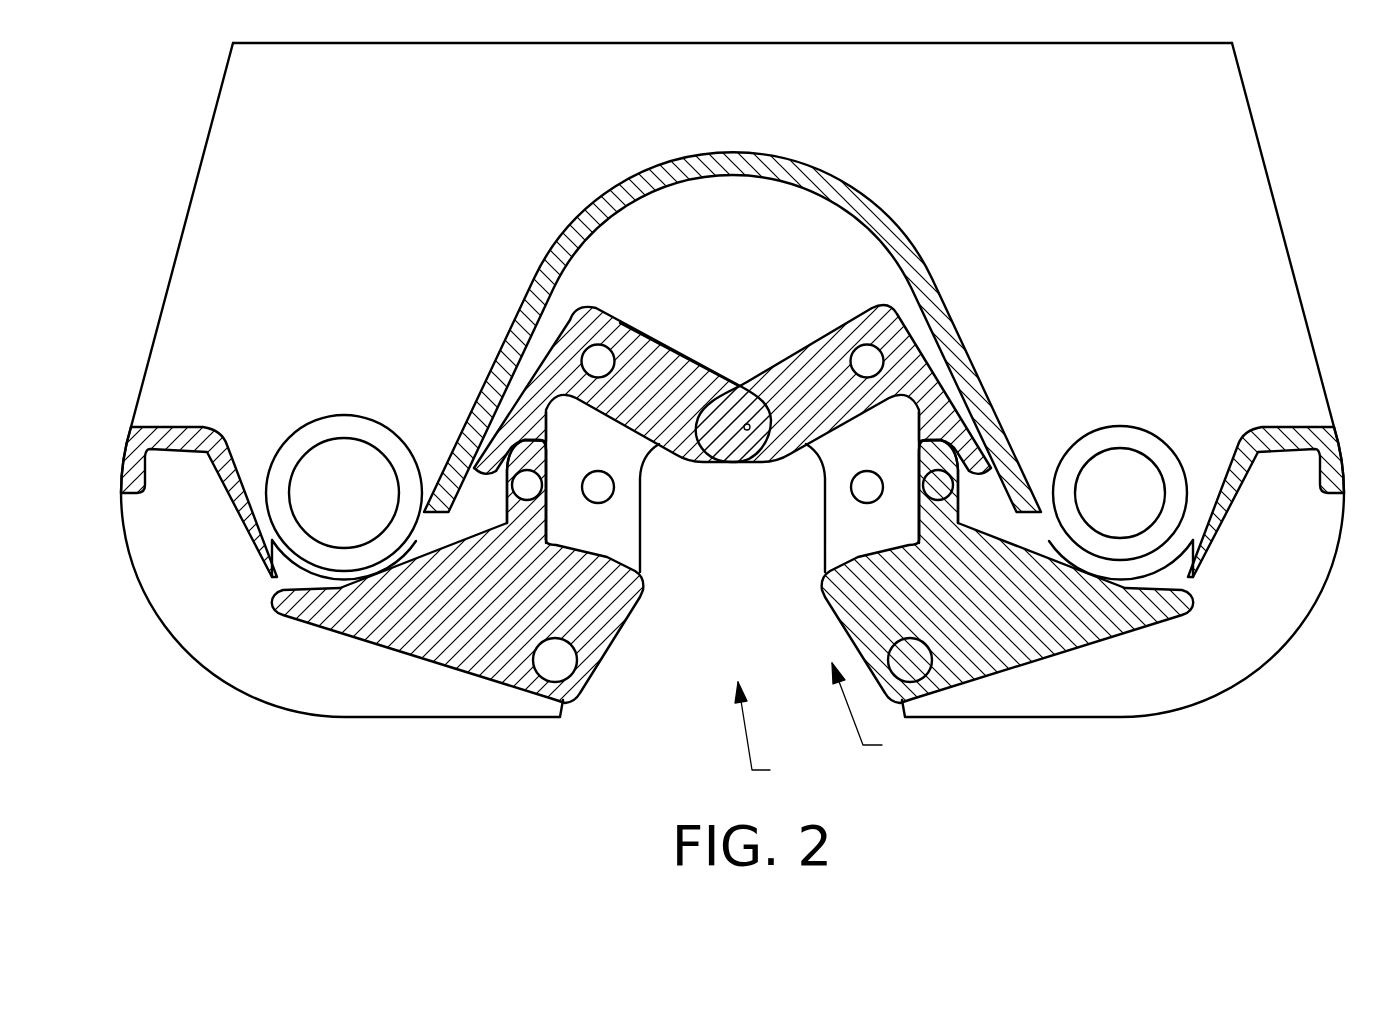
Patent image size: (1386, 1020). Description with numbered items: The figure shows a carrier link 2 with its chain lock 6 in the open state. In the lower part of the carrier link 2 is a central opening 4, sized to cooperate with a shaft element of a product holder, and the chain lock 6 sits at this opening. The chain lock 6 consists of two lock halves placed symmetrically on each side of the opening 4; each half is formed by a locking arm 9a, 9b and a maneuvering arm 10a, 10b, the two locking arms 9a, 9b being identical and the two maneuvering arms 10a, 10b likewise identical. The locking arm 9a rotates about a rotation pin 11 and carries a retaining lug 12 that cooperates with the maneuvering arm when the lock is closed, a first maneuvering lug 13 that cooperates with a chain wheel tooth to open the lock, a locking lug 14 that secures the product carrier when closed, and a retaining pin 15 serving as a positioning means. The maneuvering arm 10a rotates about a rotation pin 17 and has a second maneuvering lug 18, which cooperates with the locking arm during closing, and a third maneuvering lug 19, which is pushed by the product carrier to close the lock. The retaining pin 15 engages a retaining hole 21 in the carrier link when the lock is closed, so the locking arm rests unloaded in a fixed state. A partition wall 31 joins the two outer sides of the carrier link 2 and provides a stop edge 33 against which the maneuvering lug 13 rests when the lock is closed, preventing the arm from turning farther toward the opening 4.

The carrier link 2 is at (1277, 630).
The central opening 4 is at (763, 735).
The chain lock 6 is at (867, 713).
The locking arm 9a is at (420, 658).
The locking arm 9b is at (1044, 660).
The maneuvering arm 10a is at (540, 362).
The maneuvering arm 10b is at (932, 391).
The rotation pin 11 is at (558, 664).
The retaining lug 12 is at (460, 446).
The first maneuvering lug 13 is at (273, 617).
The locking lug 14 is at (642, 582).
The retaining pin 15 is at (527, 485).
The rotation pin 17 is at (868, 364).
The second maneuvering lug 18 is at (972, 461).
The third maneuvering lug 19 is at (747, 427).
The retaining hole 21 is at (618, 485).
The partition wall 31 is at (613, 195).
The stop edge 33 is at (432, 505).